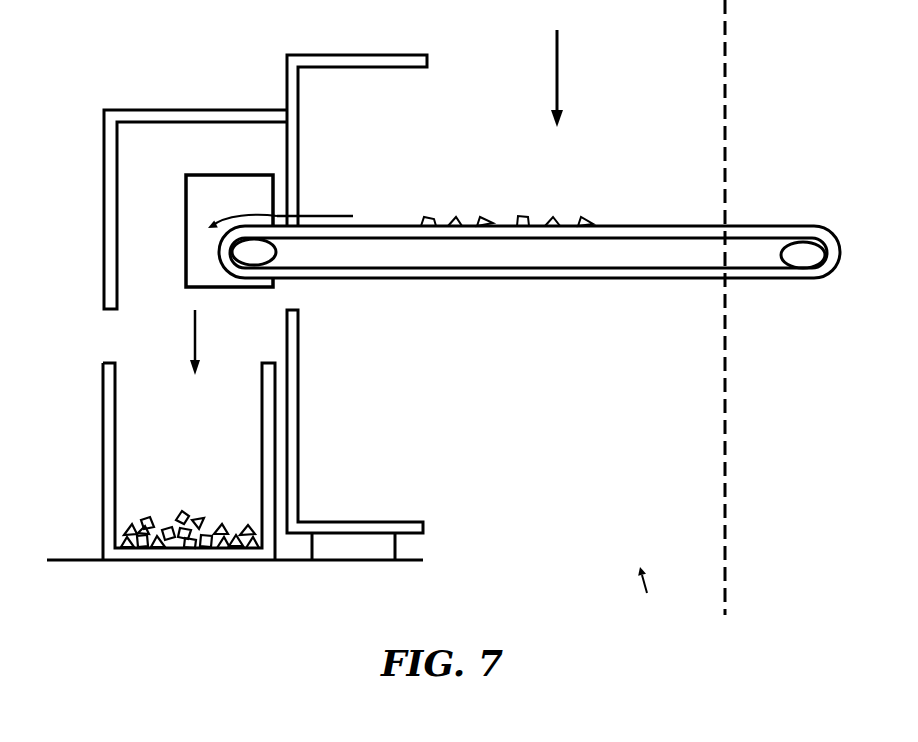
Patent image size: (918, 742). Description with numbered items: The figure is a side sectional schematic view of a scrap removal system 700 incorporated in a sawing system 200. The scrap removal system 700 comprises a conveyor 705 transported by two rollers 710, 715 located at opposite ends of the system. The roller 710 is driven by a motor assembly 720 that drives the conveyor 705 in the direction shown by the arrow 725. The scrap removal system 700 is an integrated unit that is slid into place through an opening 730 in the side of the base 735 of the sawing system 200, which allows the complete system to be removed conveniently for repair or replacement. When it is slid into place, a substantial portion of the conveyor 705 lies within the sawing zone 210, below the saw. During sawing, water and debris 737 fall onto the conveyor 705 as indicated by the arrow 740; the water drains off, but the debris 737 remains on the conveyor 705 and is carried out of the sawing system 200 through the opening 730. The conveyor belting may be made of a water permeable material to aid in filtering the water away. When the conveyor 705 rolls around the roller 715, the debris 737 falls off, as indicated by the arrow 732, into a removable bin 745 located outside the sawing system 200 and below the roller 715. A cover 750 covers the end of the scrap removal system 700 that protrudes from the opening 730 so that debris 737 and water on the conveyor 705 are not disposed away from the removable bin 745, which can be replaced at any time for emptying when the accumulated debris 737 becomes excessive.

The sawing system 200 is at (675, 143).
The sawing zone 210 is at (645, 592).
The scrap removal system 700 is at (477, 337).
The conveyor 705 is at (772, 233).
The roller 710 is at (805, 262).
The roller 715 is at (255, 258).
The motor assembly 720 is at (192, 210).
The arrow 725 is at (323, 216).
The opening 730 is at (285, 298).
The arrow 732 is at (195, 338).
The base 735 is at (290, 92).
The debris 737 is at (520, 218).
The arrow 740 is at (558, 72).
The removable bin 745 is at (112, 462).
The cover 750 is at (170, 118).